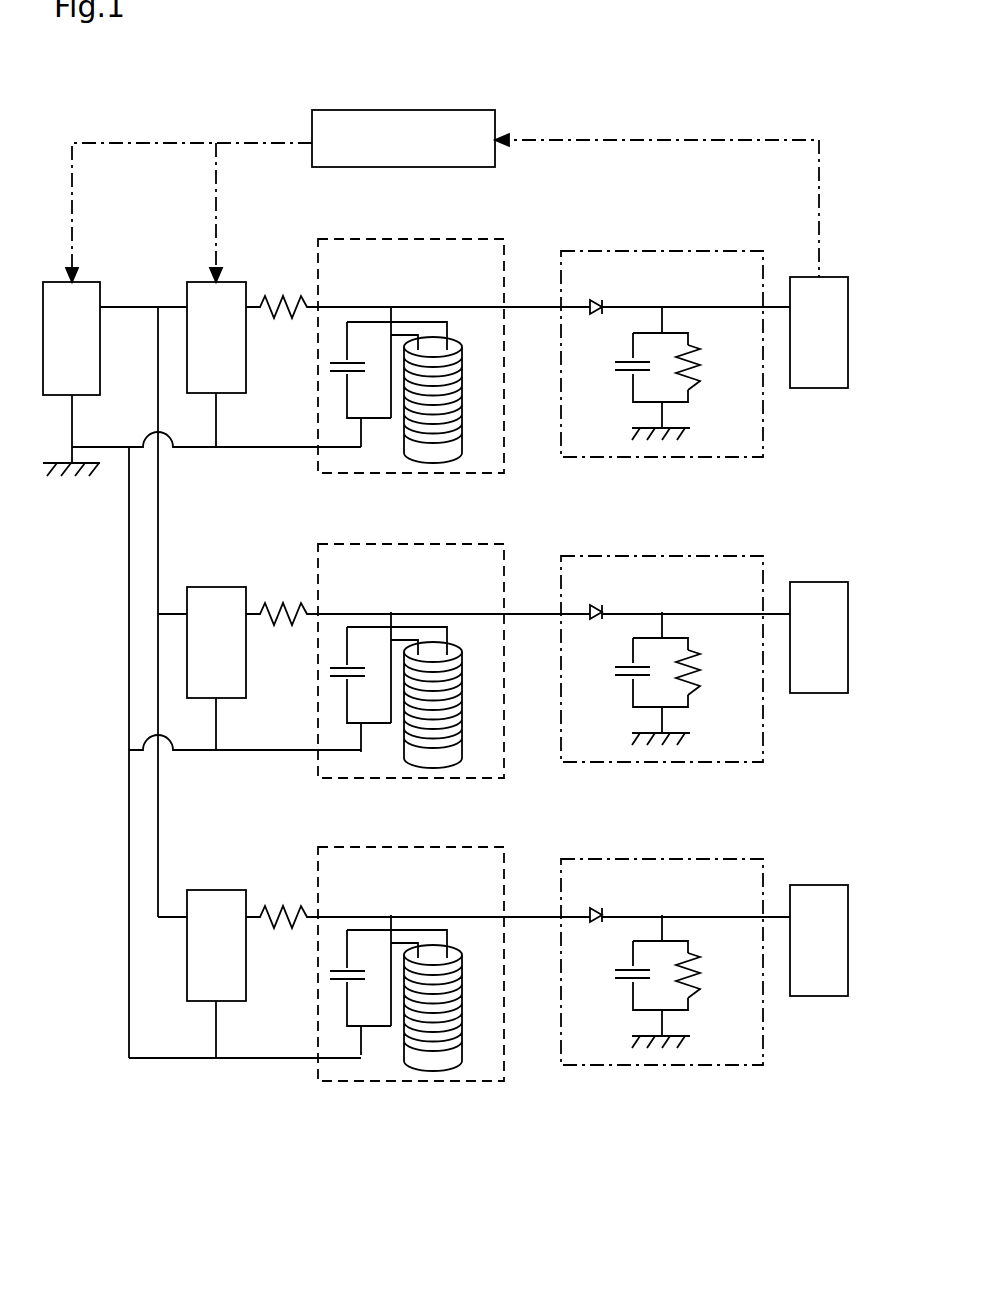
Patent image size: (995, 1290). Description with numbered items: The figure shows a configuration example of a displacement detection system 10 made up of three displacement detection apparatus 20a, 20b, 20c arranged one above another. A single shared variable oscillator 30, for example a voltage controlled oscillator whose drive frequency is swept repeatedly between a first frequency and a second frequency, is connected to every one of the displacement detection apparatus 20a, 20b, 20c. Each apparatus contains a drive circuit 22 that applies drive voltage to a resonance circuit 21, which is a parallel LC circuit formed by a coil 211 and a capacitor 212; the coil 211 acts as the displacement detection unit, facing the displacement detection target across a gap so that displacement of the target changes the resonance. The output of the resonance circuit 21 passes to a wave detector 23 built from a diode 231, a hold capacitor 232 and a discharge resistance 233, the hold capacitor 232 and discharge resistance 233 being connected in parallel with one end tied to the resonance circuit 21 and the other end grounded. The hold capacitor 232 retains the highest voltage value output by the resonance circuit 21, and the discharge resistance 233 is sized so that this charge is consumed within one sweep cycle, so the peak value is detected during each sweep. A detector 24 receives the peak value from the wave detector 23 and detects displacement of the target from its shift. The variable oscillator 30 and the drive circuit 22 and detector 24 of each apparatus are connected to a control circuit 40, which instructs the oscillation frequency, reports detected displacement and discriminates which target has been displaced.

The displacement detection system 10 is at (257, 1115).
The displacement detection apparatus 20a is at (174, 296).
The displacement detection apparatus 20b is at (118, 643).
The displacement detection apparatus 20c is at (118, 949).
The resonance circuit 21 is at (428, 238).
The coil 211 is at (453, 445).
The capacitor 212 is at (343, 367).
The drive circuit 22 is at (218, 290).
The wave detector 23 is at (641, 251).
The diode 231 is at (600, 299).
The hold capacitor 232 is at (624, 372).
The discharge resistance 233 is at (703, 378).
The detector 24 is at (829, 388).
The variable oscillator 30 is at (101, 287).
The control circuit 40 is at (418, 108).